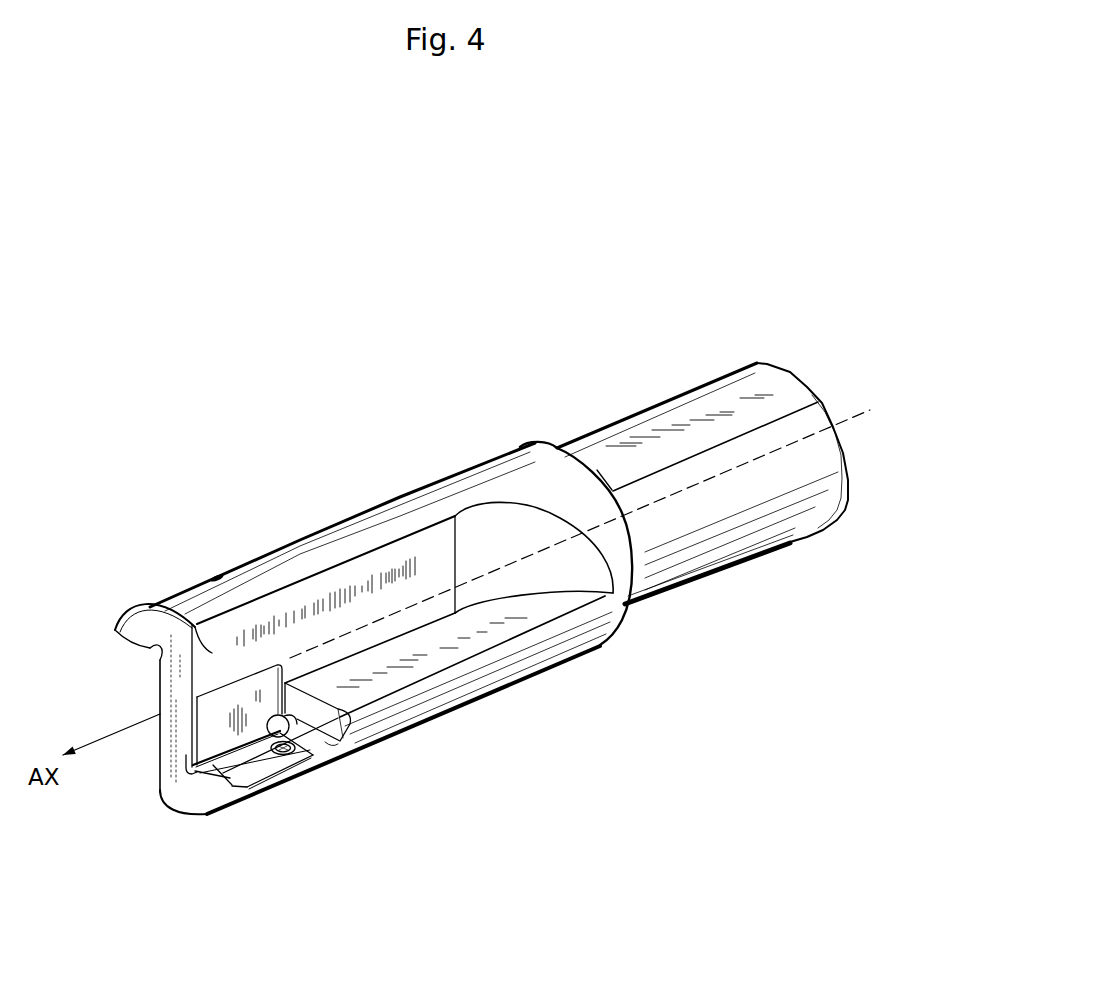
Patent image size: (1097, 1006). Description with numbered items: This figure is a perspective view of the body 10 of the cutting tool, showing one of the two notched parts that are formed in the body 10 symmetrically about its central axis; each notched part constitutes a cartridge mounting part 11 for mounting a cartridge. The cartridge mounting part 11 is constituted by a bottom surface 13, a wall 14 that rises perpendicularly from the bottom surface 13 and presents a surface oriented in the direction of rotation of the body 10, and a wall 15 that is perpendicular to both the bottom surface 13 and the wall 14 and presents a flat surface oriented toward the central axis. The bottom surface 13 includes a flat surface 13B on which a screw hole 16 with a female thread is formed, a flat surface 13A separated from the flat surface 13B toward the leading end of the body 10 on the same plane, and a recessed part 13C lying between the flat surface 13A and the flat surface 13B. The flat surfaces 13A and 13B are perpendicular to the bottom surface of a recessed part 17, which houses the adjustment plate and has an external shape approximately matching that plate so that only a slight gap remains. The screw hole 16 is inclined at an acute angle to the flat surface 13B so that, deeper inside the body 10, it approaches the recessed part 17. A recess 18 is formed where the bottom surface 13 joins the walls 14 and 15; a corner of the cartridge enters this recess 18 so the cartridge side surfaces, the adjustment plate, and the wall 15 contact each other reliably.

The body 10 is at (522, 480).
The cartridge mounting part 11 is at (292, 762).
The bottom surface 13 is at (121, 815).
The flat surface 13A is at (210, 772).
The flat surface 13B is at (288, 758).
The recessed part 13C is at (245, 763).
The wall 14 is at (195, 627).
The wall 15 is at (330, 722).
The screw hole 16 is at (318, 765).
The recessed part 17 is at (217, 723).
The recess 18 is at (330, 748).